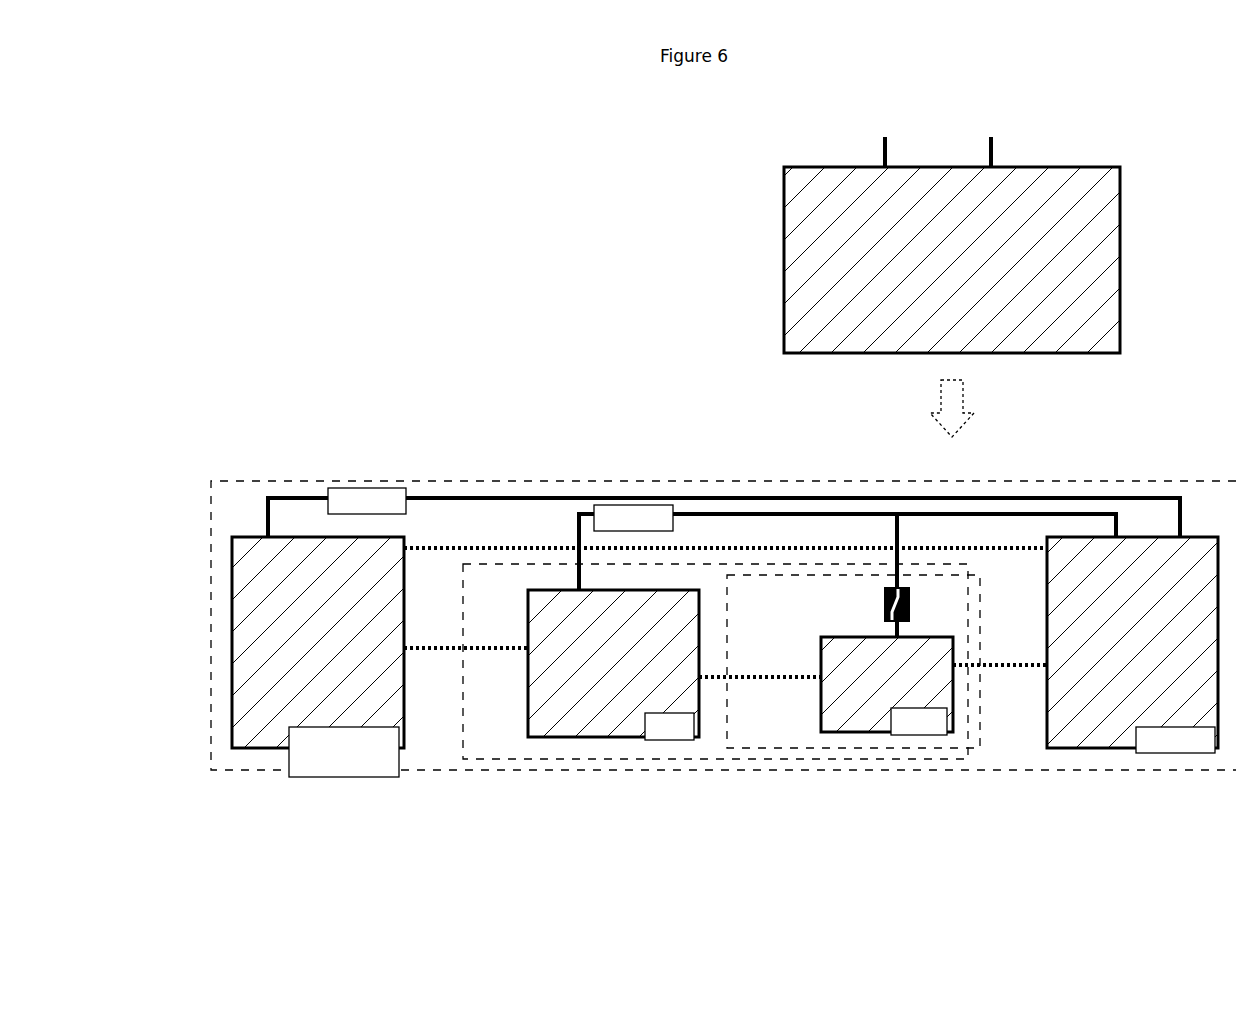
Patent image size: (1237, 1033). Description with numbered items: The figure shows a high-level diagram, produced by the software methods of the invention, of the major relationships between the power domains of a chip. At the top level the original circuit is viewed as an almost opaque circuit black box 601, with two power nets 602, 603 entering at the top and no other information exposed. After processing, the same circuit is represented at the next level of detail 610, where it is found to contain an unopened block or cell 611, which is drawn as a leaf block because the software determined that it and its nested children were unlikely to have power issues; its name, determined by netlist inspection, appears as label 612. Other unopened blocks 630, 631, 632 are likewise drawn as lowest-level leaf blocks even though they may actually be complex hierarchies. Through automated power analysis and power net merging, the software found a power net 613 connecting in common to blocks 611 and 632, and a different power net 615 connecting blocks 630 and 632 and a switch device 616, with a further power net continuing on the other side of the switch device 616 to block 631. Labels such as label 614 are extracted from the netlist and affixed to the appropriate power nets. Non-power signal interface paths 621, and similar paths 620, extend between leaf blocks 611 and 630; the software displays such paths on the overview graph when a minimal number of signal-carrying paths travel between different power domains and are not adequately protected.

The circuit black box 601 is at (766, 262).
The power net 602 is at (905, 142).
The power net 603 is at (1010, 144).
The next level of detail 610 is at (725, 465).
The unopened block or cell 611 is at (214, 641).
The label 612 is at (325, 765).
The power net 613 is at (457, 480).
The label 614 is at (367, 470).
The power net 615 is at (847, 494).
The switch device 616 is at (866, 603).
The signal bus to io_ring 620 is at (455, 567).
The non-power signal interface nets or paths 621 is at (463, 668).
The unopened block 630 is at (612, 755).
The unopened block 631 is at (886, 750).
The unopened block 632 is at (1131, 766).